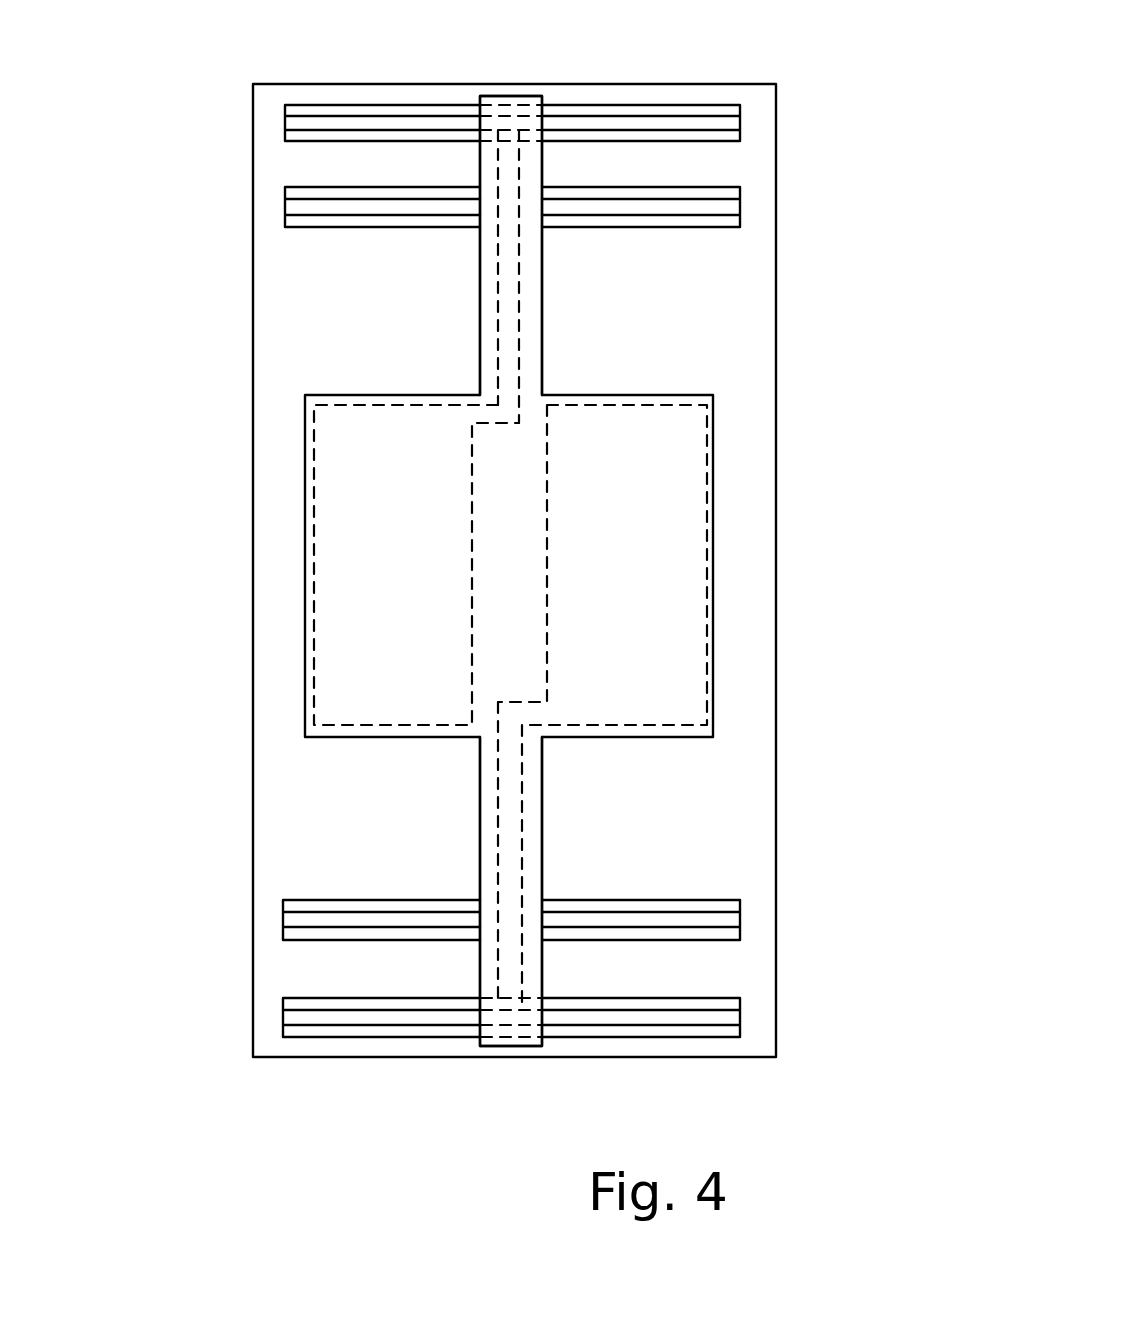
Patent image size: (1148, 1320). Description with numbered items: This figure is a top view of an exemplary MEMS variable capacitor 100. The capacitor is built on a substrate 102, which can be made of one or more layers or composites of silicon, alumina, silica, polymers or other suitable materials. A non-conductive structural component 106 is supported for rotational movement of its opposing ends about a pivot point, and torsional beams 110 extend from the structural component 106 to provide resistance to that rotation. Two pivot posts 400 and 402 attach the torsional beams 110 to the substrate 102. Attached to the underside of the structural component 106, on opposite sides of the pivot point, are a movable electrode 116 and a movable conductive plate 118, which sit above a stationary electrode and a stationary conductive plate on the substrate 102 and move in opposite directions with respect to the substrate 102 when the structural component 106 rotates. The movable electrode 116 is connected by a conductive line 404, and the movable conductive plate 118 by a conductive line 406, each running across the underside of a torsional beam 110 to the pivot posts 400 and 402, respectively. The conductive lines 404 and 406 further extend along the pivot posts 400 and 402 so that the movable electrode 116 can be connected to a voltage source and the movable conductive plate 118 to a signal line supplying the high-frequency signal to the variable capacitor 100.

The variable capacitor 100 is at (170, 273).
The substrate 102 is at (777, 258).
The structural component 106 is at (713, 726).
The torsional beams 110 is at (542, 344).
The movable electrode 116 is at (313, 652).
The movable conductive plate 118 is at (707, 545).
The pivot post 400 is at (735, 106).
The pivot post 402 is at (740, 940).
The conductive line 404 is at (520, 288).
The conductive line 406 is at (500, 805).